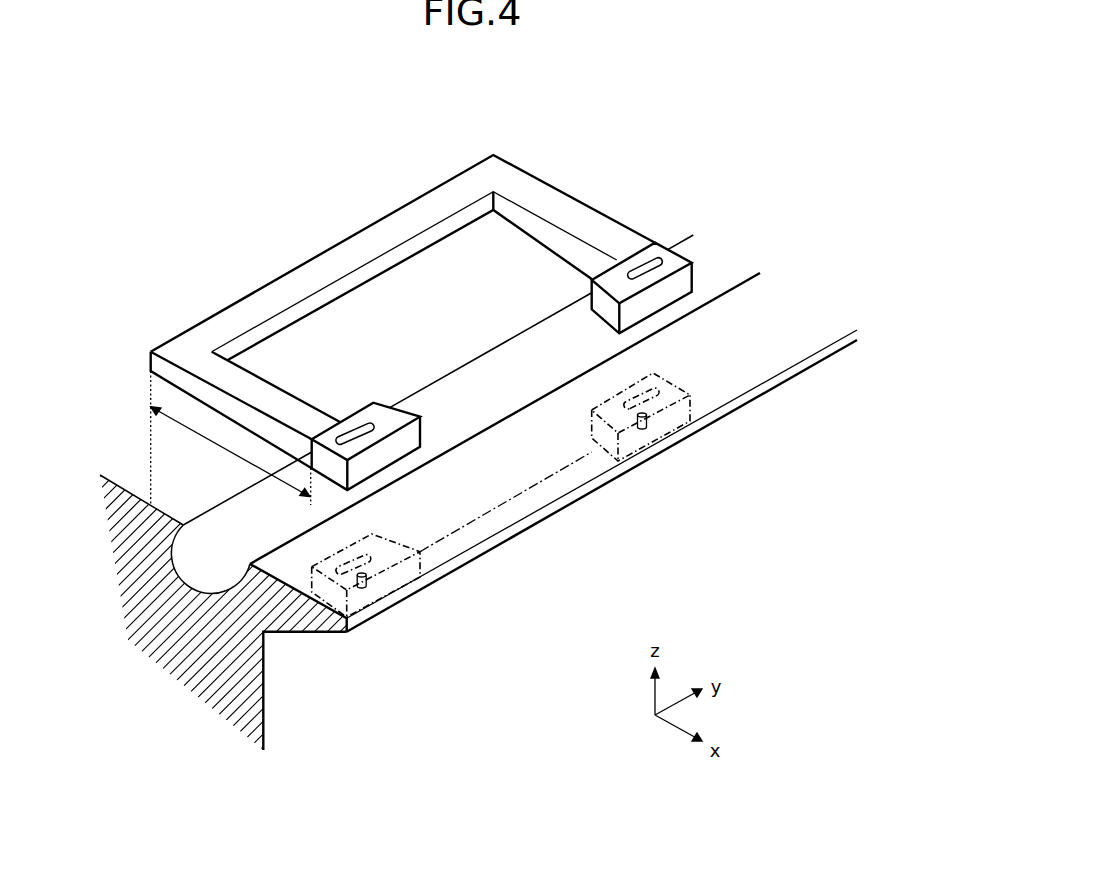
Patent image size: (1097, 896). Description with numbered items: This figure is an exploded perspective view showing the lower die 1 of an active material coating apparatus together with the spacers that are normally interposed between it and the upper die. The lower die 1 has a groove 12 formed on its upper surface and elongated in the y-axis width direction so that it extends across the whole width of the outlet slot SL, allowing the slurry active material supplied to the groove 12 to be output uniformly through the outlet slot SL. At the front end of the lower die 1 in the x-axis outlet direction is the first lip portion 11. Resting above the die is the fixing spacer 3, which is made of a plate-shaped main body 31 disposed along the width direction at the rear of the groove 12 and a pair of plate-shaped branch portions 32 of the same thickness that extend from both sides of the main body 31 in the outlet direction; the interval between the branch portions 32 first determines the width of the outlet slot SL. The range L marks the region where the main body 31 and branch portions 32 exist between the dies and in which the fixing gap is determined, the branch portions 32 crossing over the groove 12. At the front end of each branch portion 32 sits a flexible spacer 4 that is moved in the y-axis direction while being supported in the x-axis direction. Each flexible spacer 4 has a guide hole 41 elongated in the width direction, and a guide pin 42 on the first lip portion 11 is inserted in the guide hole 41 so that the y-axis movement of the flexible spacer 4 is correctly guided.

The lower die 1 is at (166, 627).
The first lip portion 11 is at (305, 621).
The groove 12 is at (197, 552).
The fixing spacer 3 is at (403, 311).
The main body 31 is at (322, 260).
The branch portion 32 is at (268, 398).
The flexible spacer 4 is at (502, 455).
The guide hole 41 is at (358, 430).
The guide pin 42 is at (367, 583).
The outlet slot SL is at (540, 495).
The range L is at (231, 438).